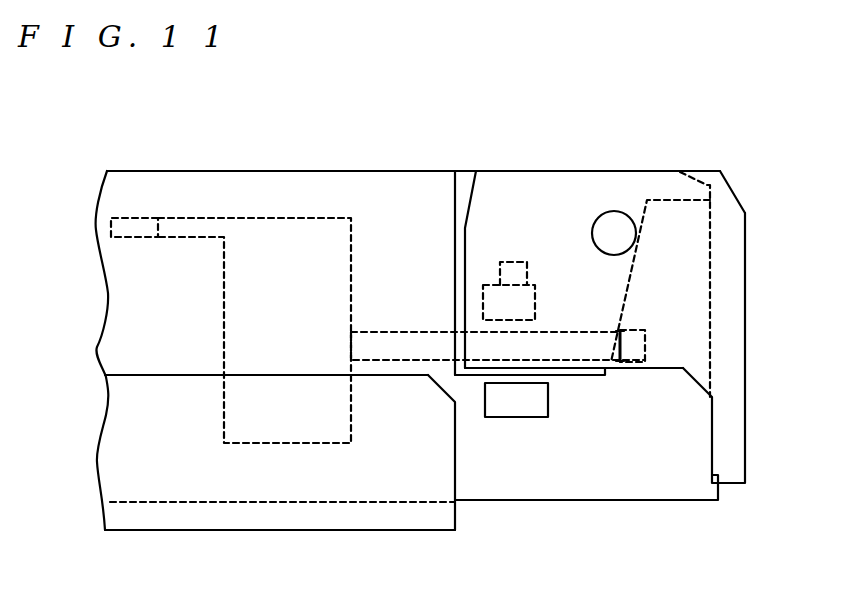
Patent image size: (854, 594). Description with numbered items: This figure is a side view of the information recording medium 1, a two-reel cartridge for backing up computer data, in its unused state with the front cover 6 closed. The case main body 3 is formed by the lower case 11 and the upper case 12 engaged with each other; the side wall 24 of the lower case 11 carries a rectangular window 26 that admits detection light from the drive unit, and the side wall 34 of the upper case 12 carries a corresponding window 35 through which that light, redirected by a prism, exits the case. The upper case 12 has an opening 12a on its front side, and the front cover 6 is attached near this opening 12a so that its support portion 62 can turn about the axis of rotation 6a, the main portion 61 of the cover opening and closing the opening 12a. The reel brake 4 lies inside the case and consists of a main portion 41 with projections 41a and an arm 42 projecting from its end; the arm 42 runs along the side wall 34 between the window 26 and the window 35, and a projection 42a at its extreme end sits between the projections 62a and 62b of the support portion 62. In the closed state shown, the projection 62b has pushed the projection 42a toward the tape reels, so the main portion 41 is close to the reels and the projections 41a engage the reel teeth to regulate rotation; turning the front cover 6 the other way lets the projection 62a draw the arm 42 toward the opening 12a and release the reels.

The information recording medium 1 is at (291, 116).
The case main body 3 is at (72, 364).
The reel brake 4 is at (373, 200).
The front cover 6 is at (765, 345).
The axis of rotation 6a is at (633, 212).
The lower case 11 is at (110, 430).
The upper case 12 is at (110, 300).
The opening 12a is at (700, 284).
The side wall 24 is at (574, 480).
The window 26 is at (519, 400).
The side wall 34 is at (464, 183).
The window 35 is at (522, 300).
The main portion 41 is at (280, 222).
The projection 41a is at (143, 222).
The arm 42 is at (420, 345).
The projection 42a is at (601, 341).
The main portion 61 is at (735, 251).
The support portion 62 is at (595, 188).
The projection 62a is at (512, 262).
The projection 62b is at (634, 336).